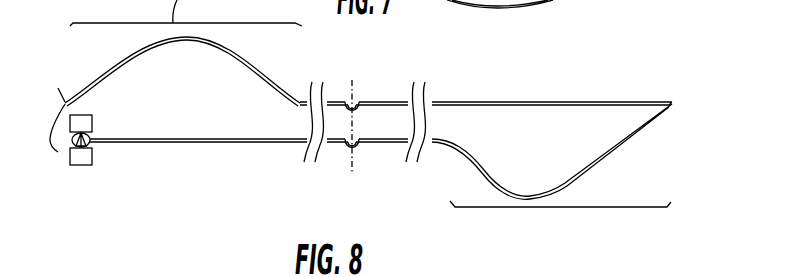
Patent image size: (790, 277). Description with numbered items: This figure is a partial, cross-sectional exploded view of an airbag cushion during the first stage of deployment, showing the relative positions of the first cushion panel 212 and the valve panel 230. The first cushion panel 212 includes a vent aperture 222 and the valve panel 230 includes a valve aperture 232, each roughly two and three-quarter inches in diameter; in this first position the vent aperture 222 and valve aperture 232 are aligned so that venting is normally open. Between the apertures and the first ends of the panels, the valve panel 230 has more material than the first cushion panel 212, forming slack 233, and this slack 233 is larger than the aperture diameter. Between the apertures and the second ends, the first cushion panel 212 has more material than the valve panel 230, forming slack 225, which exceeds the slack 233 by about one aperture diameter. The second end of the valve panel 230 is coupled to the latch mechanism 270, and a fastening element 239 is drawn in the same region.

The first cushion panel 212 is at (595, 102).
The vent aperture 222 is at (352, 100).
The valve panel 230 is at (582, 178).
The valve aperture 232 is at (352, 152).
The slack in the valve panel 233 is at (557, 207).
The fastener knot 239 is at (90, 135).
The latch mechanism 270 is at (84, 166).
The slack in the first cushion panel 225 is at (128, 276).